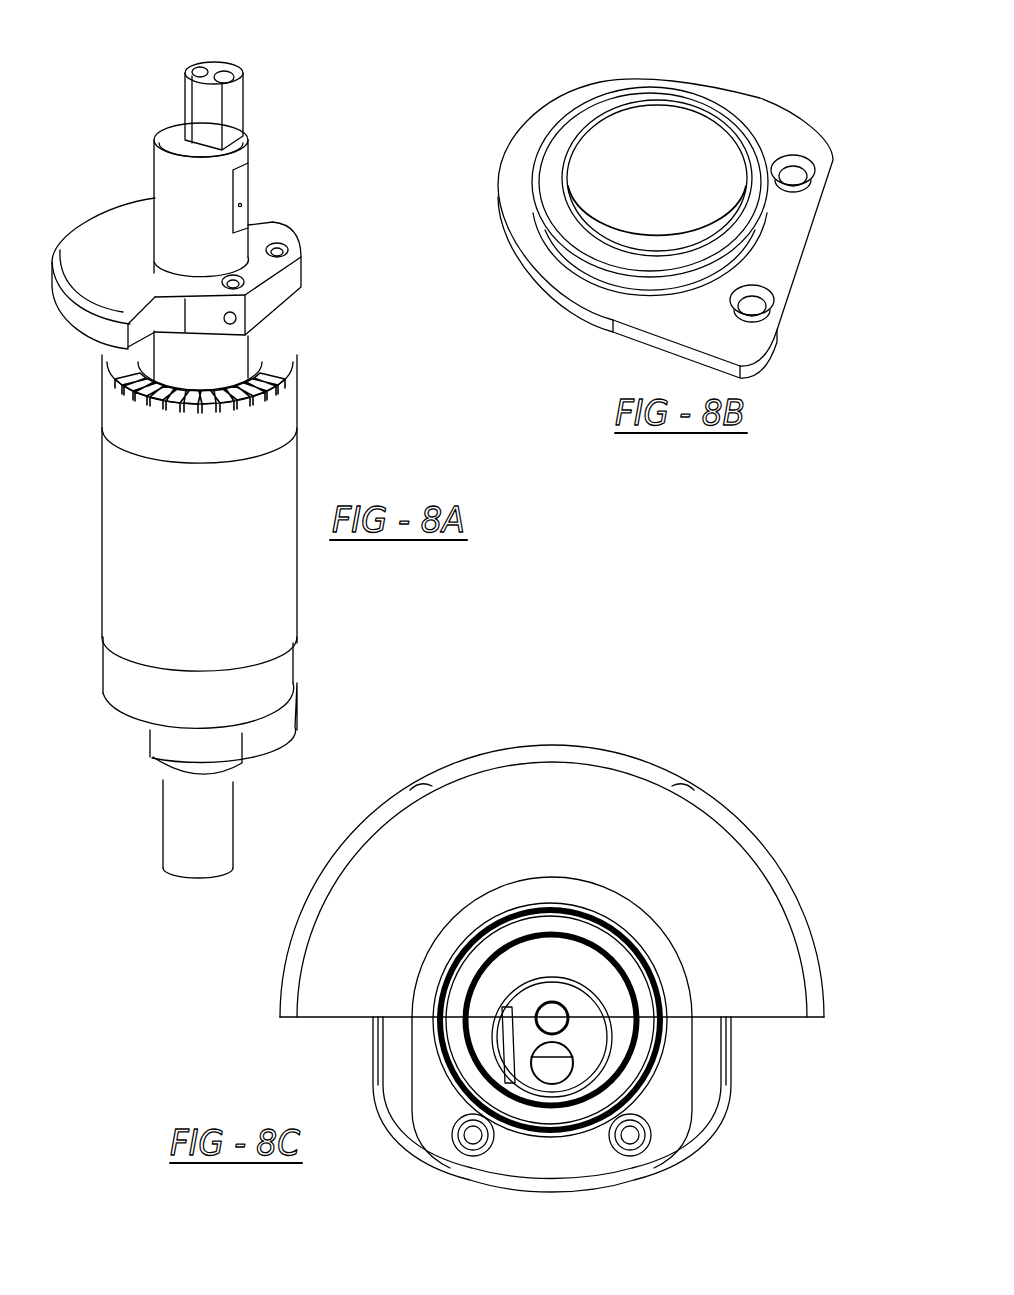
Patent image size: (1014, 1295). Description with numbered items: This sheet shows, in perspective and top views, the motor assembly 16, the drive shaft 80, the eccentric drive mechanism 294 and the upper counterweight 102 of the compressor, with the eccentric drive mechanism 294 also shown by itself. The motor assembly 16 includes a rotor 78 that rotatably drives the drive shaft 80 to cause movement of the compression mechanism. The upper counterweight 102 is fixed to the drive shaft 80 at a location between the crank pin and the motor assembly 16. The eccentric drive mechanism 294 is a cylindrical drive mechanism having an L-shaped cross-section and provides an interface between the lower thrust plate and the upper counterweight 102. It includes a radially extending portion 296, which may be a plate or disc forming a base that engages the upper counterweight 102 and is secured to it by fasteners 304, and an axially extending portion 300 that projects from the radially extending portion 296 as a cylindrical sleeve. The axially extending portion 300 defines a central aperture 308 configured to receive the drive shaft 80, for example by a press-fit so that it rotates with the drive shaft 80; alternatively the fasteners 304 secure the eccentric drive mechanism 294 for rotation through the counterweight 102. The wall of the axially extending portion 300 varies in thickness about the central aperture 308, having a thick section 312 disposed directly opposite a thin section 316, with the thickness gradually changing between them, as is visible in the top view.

In FIG. 8A, the motor assembly 16 is at (100, 530).
In FIG. 8A, the rotor 78 is at (278, 592).
In FIG. 8A, the drive shaft 80 is at (180, 818).
In FIG. 8C, the drive shaft 80 is at (582, 1042).
In FIG. 8A, the upper counterweight 102 is at (75, 312).
In FIG. 8C, the upper counterweight 102 is at (715, 847).
In FIG. 8A, the fasteners 304 is at (285, 247).
In FIG. 8B, the eccentric drive mechanism 294 is at (668, 60).
In FIG. 8C, the eccentric drive mechanism 294 is at (667, 1168).
In FIG. 8B, the radially extending portion 296 is at (760, 108).
In FIG. 8C, the radially extending portion 296 is at (670, 1112).
In FIG. 8B, the axially extending portion 300 is at (568, 128).
In FIG. 8C, the axially extending portion 300 is at (545, 1128).
In FIG. 8B, the central aperture 308 is at (653, 168).
In FIG. 8C, the central aperture 308 is at (462, 1043).
In FIG. 8C, the thick section 312 is at (450, 1015).
In FIG. 8C, the thin section 316 is at (660, 1022).